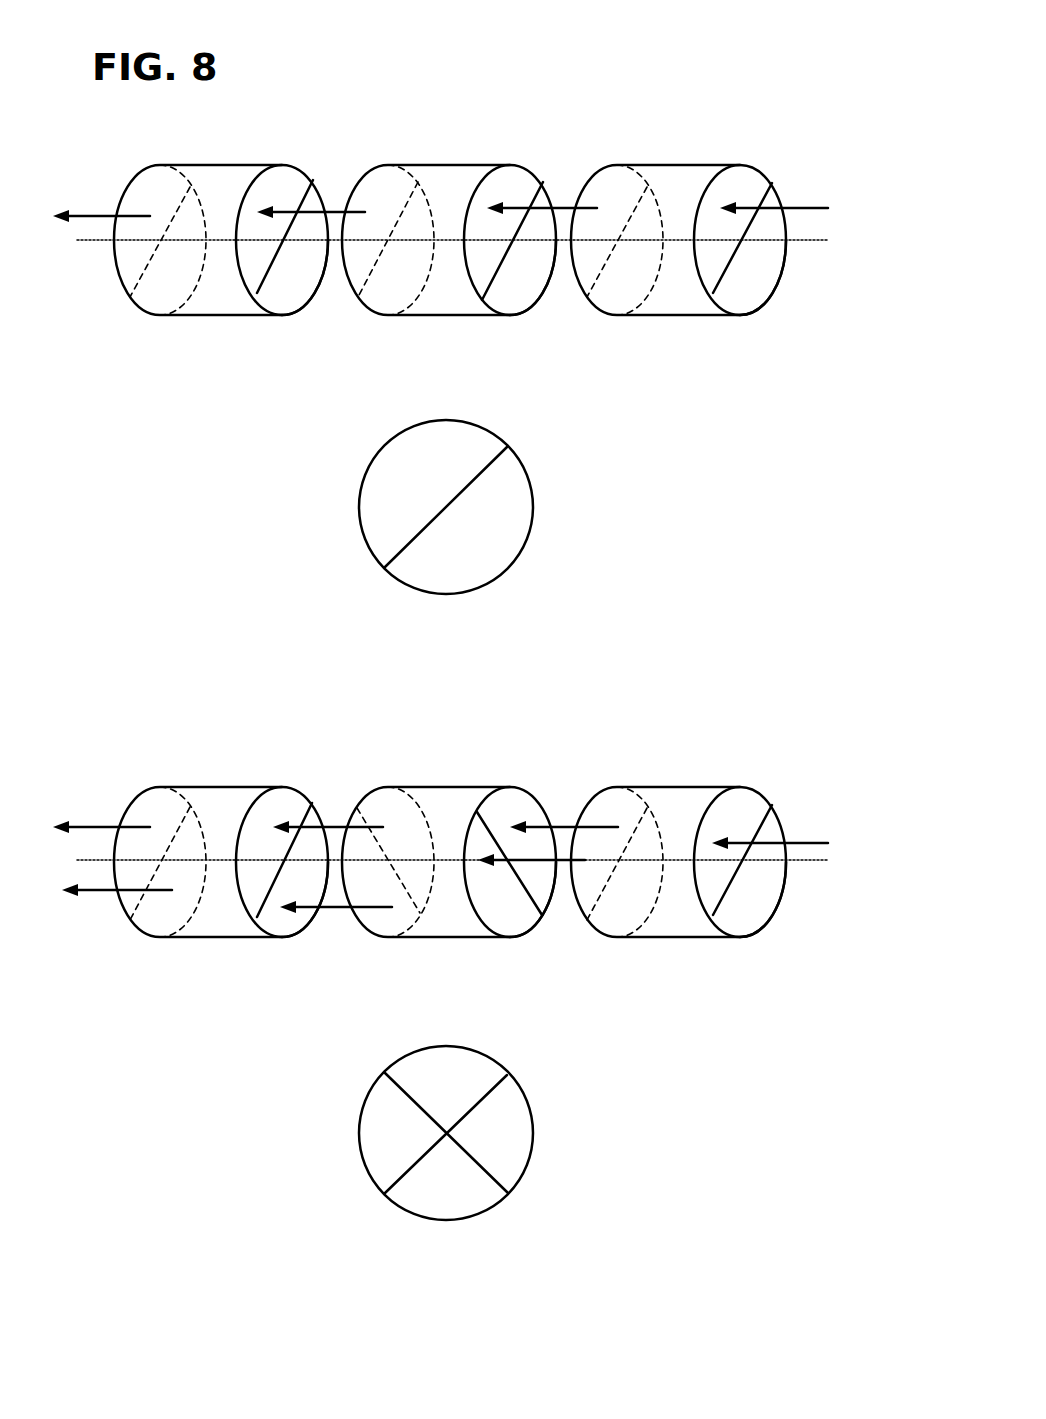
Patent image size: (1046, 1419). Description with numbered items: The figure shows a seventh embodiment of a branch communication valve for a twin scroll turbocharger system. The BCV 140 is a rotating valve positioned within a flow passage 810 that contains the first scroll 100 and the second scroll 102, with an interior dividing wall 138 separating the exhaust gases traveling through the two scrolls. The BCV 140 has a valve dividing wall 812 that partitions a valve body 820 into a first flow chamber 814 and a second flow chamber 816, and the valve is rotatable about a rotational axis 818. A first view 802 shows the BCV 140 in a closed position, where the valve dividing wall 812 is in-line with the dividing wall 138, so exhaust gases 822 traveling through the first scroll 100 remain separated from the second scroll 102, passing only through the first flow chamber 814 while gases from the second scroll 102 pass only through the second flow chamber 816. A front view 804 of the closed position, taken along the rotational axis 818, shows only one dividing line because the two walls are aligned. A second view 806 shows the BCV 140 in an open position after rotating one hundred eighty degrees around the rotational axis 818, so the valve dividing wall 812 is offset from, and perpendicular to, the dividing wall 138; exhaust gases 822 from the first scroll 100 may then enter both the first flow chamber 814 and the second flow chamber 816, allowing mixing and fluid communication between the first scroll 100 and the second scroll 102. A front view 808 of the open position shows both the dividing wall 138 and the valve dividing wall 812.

The first scroll 100 is at (285, 185).
The second scroll 102 is at (288, 295).
The dividing wall 138 is at (257, 293).
The BCV 140 is at (428, 120).
The first view 802 is at (733, 105).
The front view 804 is at (645, 513).
The second view 806 is at (695, 717).
The front view 808 is at (658, 1150).
The flow passage 810 is at (193, 165).
The valve dividing wall 812 is at (493, 293).
The first flow chamber 814 is at (515, 185).
The second flow chamber 816 is at (525, 278).
The rotational axis 818 is at (805, 242).
The valve body 820 is at (430, 167).
The exhaust gases 822 is at (805, 207).